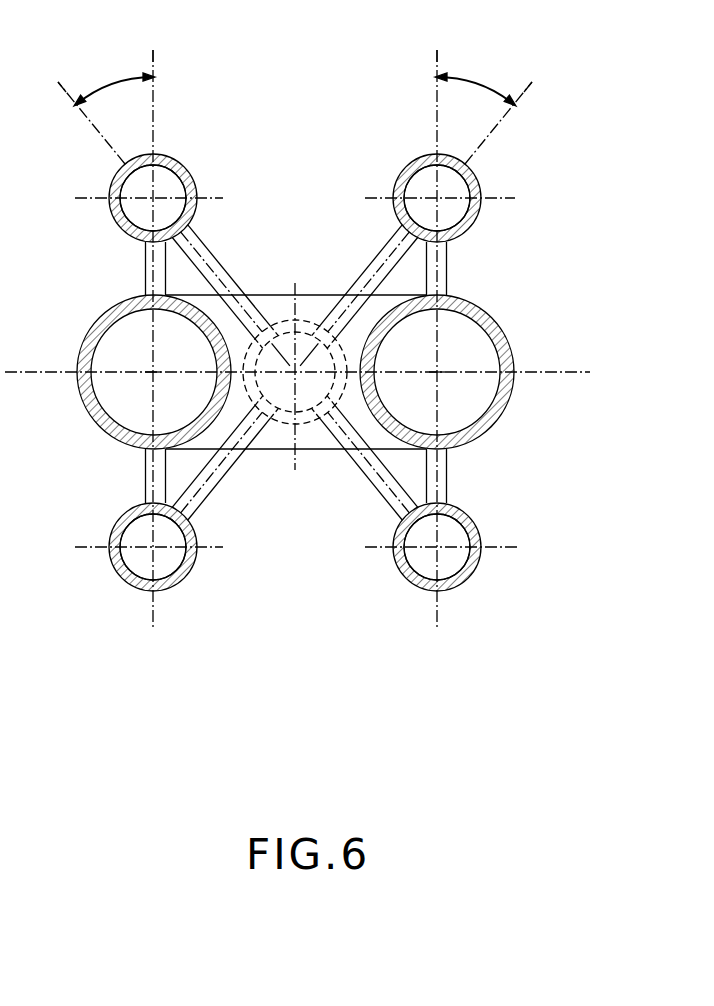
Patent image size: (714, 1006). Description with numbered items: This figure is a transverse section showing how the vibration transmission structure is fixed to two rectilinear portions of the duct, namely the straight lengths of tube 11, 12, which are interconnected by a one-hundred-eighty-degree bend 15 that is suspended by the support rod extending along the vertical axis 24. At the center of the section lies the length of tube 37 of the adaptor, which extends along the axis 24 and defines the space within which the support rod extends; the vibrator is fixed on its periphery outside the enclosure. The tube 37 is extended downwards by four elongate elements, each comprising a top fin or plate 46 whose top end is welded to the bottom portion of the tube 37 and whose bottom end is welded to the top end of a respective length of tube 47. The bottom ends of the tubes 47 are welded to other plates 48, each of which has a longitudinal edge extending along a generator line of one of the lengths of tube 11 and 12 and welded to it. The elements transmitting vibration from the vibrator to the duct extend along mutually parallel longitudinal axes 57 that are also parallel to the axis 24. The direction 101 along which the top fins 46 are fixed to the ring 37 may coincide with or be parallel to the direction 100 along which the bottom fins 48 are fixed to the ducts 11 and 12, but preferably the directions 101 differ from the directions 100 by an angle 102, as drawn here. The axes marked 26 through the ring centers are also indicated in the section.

The straight length of tube 11 is at (103, 313).
The straight length of tube 12 is at (507, 345).
The bend 15 is at (312, 290).
The vertical axis 24 is at (300, 382).
The ring axis 26 is at (150, 374).
The length of tube 37 is at (285, 405).
The plate 46 is at (217, 265).
The length of tube 47 is at (184, 163).
The plate 48 is at (148, 259).
The longitudinal axis 57 is at (438, 198).
The direction 100 is at (156, 56).
The direction 101 is at (60, 84).
The angle 102 is at (114, 78).